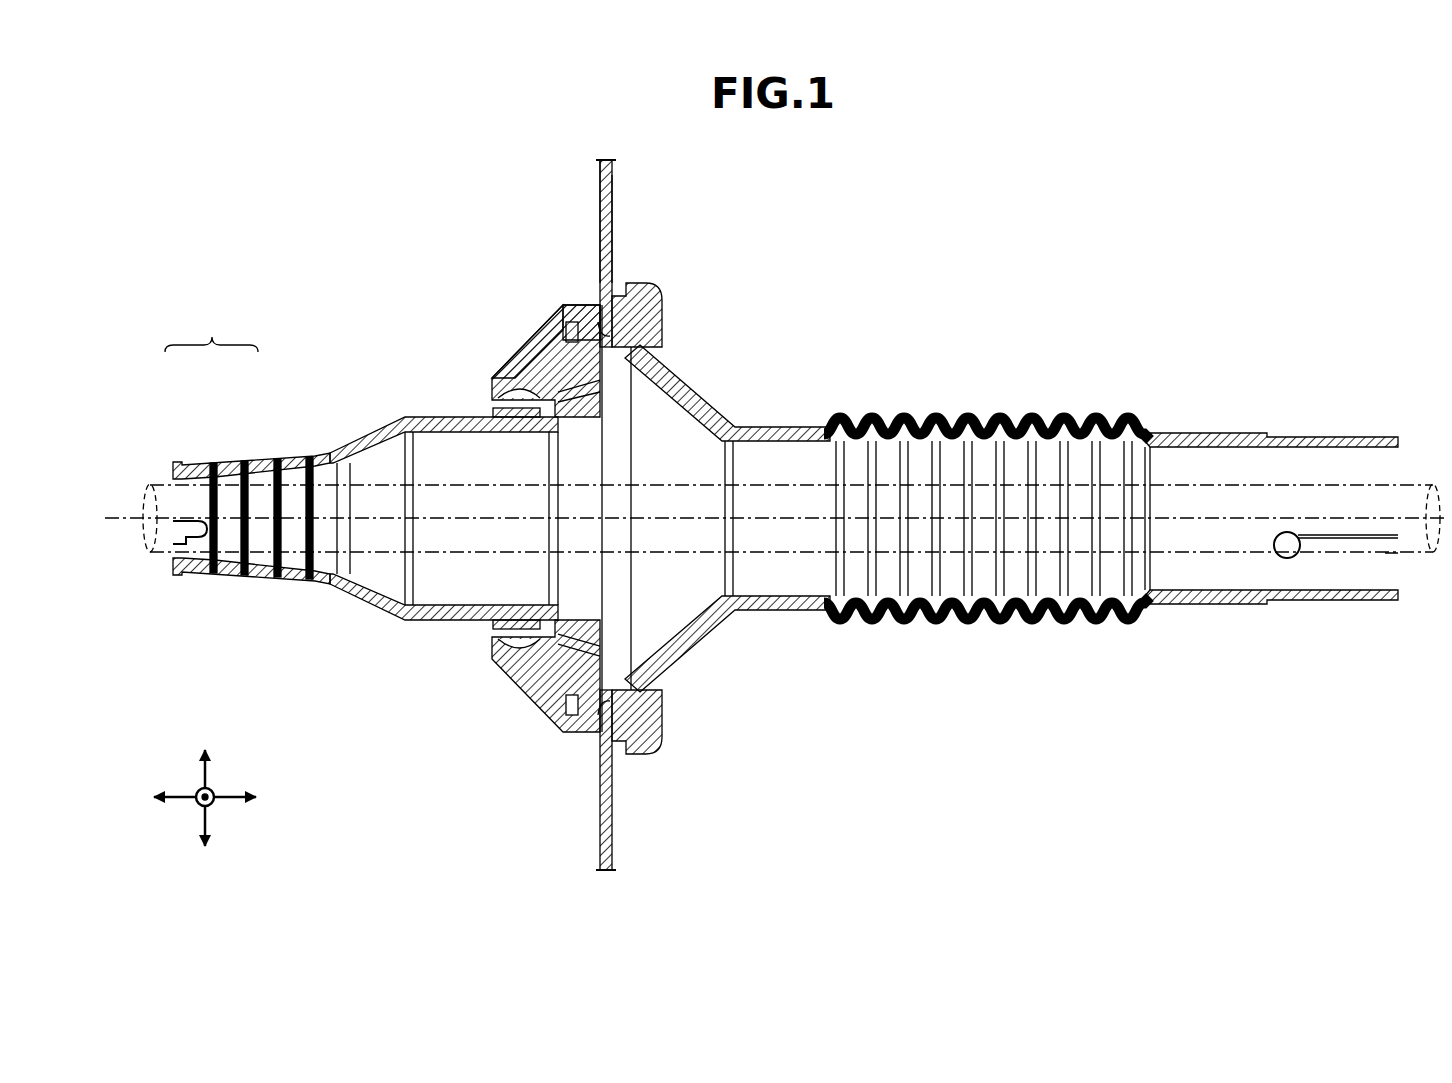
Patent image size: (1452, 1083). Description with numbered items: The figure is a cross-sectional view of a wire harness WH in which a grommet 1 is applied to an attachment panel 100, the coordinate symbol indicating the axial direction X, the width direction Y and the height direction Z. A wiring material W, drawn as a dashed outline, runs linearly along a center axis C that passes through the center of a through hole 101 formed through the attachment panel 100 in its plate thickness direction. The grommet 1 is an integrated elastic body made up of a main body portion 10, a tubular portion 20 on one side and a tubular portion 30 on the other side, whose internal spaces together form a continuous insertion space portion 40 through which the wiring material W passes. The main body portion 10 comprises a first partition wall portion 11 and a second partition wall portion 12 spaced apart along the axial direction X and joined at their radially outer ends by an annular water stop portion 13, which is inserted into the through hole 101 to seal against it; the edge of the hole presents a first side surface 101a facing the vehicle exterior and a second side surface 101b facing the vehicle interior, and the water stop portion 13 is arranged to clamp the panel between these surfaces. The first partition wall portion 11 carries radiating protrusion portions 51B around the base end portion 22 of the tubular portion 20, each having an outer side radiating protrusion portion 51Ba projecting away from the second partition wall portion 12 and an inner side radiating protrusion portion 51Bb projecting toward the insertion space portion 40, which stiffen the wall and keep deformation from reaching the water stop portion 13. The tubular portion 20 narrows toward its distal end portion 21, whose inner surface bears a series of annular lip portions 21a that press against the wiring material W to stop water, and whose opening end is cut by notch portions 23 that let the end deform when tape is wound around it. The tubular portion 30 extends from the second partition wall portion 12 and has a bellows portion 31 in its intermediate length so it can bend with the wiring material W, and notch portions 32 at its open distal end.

The grommet 1 is at (270, 412).
The main body portion 10 is at (556, 308).
The first partition wall portion 11 is at (520, 338).
The second partition wall portion 12 is at (701, 379).
The water stop portion 13 is at (624, 290).
The tubular portion 20 is at (355, 602).
The distal end portion 21 is at (265, 573).
The lip portion 21a is at (240, 535).
The base end portion 22 is at (478, 622).
The notch portion 23 is at (178, 540).
The tubular portion 30 is at (1206, 426).
The bellows portion 31 is at (1092, 622).
The notch portion 32 is at (1395, 545).
The insertion space portion 40 is at (692, 452).
The radiating protrusion portion 51B is at (340, 198).
The outer side radiating protrusion portion 51Ba is at (560, 398).
The inner side radiating protrusion portion 51Bb is at (520, 410).
The attachment panel 100 is at (616, 163).
The through hole 101 is at (606, 330).
The first side surface 101a is at (613, 210).
The second side surface 101b is at (598, 172).
The wiring material W is at (150, 482).
The wire harness WH is at (211, 323).
The center axis C is at (143, 516).
The axial direction X is at (178, 797).
The width direction Y is at (213, 790).
The height direction Z is at (207, 822).